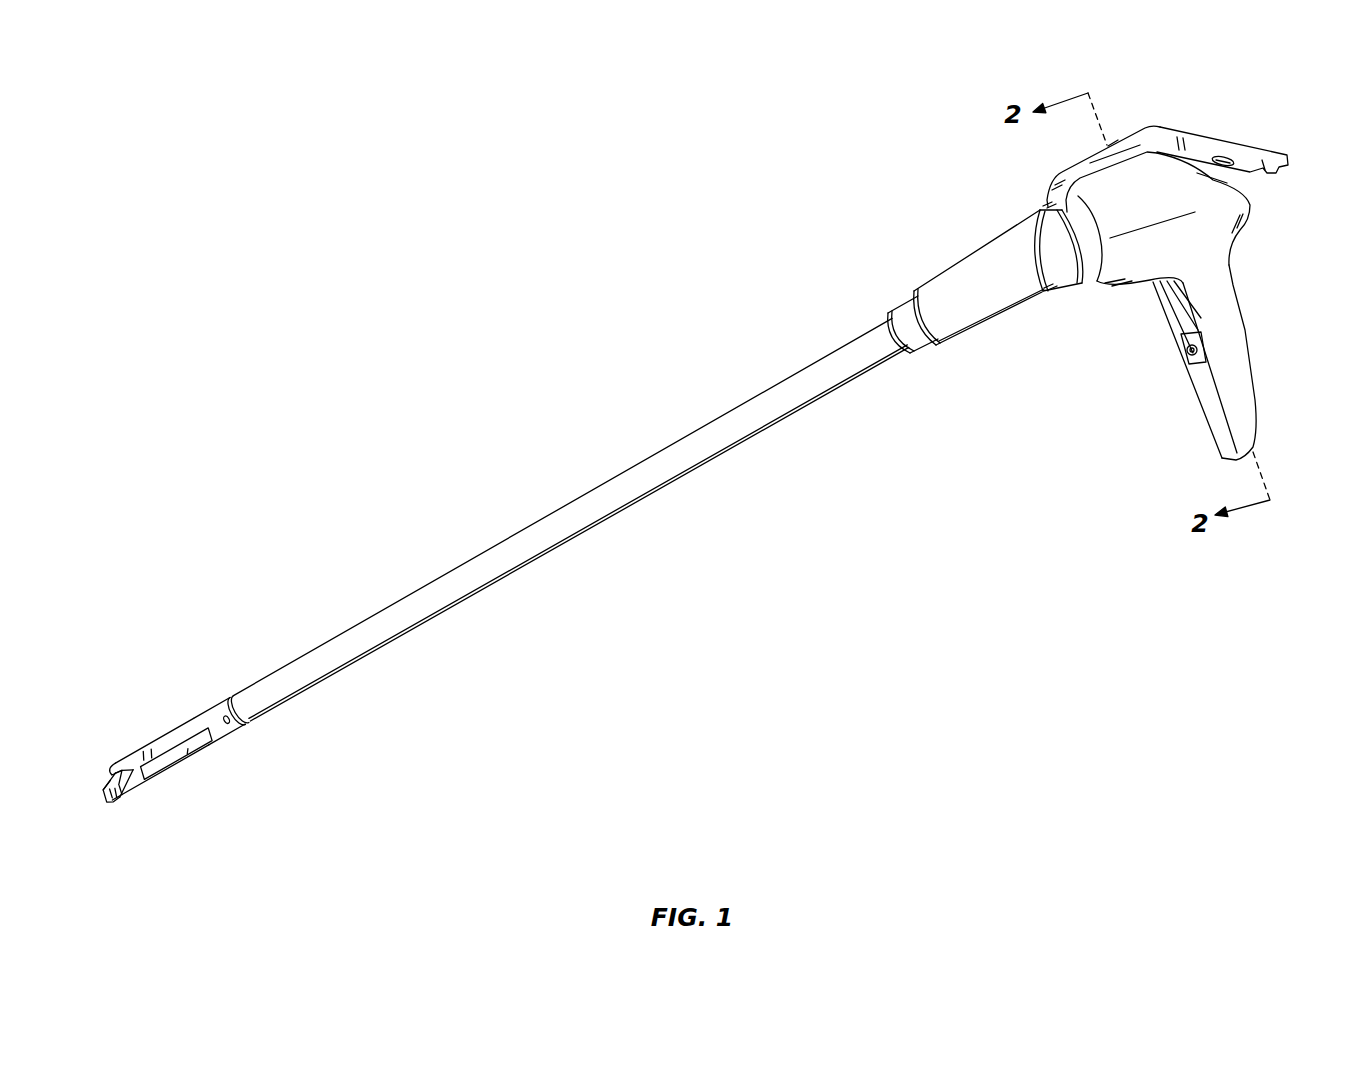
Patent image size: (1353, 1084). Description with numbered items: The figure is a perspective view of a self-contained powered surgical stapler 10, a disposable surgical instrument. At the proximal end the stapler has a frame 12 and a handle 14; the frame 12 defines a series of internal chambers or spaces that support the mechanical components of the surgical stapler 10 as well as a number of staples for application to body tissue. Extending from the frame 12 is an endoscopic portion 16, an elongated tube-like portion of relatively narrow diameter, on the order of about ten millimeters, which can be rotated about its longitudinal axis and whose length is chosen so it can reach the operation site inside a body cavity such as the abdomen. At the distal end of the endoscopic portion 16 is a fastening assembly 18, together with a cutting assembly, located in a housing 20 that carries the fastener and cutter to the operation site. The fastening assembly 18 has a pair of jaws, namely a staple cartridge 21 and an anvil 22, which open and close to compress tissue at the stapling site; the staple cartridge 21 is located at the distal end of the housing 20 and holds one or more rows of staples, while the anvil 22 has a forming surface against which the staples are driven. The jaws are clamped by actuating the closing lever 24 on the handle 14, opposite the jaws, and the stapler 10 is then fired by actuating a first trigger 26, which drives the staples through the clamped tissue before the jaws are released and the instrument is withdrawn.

The surgical stapler 10 is at (472, 296).
The frame 12 is at (996, 215).
The handle 14 is at (1257, 428).
The endoscopic portion 16 is at (553, 510).
The fastening assembly 18 is at (136, 806).
The housing 20 is at (203, 711).
The staple cartridge 21 is at (101, 800).
The anvil 22 is at (126, 757).
The closing lever 24 is at (1207, 135).
The first trigger 26 is at (1183, 350).